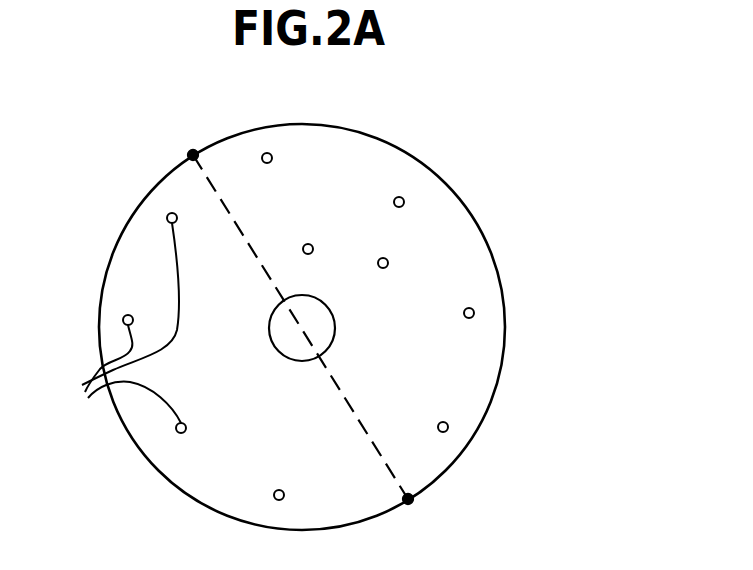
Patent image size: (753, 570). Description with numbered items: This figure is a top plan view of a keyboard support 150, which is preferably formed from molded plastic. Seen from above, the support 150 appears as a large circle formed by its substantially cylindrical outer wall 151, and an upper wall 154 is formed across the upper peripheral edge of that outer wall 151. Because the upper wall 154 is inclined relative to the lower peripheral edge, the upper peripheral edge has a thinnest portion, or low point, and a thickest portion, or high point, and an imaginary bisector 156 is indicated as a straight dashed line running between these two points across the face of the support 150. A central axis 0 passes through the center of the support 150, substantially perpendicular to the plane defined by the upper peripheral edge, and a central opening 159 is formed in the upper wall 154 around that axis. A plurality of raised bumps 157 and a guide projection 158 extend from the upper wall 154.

The support 150 is at (521, 442).
The outer wall 151 is at (477, 222).
The upper wall 154 is at (420, 358).
The imaginary bisector 156 is at (253, 251).
The raised bumps 157 is at (109, 323).
The guide projection 158 is at (386, 267).
The central opening 159 is at (325, 297).
The central axis 0 is at (312, 326).